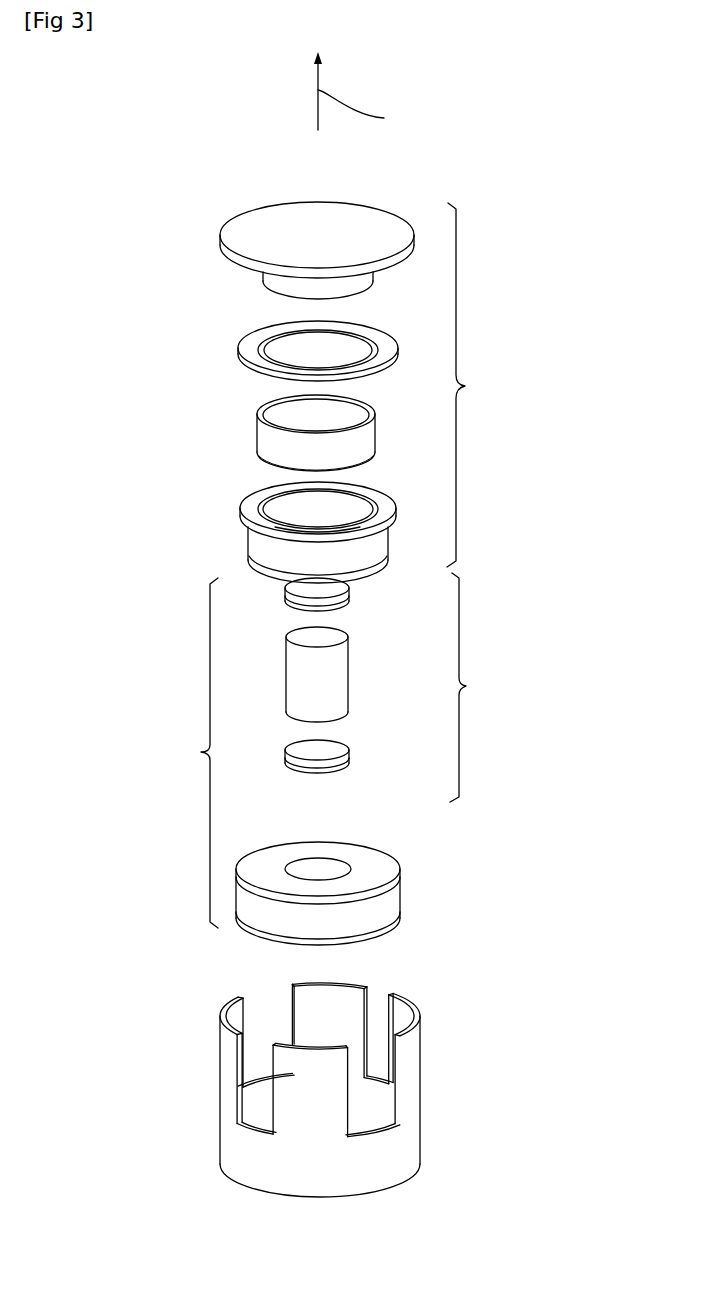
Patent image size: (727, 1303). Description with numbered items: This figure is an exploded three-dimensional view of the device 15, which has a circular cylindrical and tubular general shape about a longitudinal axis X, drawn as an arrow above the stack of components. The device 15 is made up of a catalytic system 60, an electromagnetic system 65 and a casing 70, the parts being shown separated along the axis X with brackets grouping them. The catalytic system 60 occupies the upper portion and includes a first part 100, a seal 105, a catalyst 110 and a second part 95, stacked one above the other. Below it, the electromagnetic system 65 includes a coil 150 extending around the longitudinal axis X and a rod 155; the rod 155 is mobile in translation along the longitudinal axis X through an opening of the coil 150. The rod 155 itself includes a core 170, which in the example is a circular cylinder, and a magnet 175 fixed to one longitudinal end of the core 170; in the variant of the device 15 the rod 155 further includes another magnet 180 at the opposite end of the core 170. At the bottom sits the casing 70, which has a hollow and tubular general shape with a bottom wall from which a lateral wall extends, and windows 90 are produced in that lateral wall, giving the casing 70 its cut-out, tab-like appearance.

The device 15 is at (503, 553).
The catalytic system 60 is at (465, 386).
The electromagnetic system 65 is at (201, 752).
The casing 70 is at (348, 1062).
The windows 90 is at (268, 1020).
The second part 95 is at (273, 548).
The first part 100 is at (222, 253).
The seal 105 is at (247, 348).
The catalyst 110 is at (263, 440).
The coil 150 is at (375, 908).
The rod 155 is at (466, 686).
The core 170 is at (328, 678).
The magnet 175 is at (345, 602).
The another magnet 180 is at (345, 765).
The longitudinal axis X is at (358, 94).